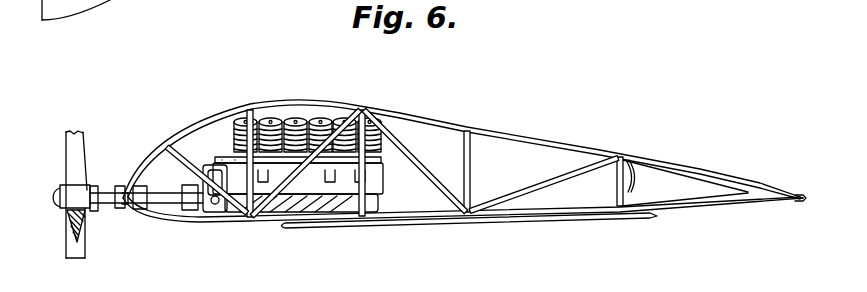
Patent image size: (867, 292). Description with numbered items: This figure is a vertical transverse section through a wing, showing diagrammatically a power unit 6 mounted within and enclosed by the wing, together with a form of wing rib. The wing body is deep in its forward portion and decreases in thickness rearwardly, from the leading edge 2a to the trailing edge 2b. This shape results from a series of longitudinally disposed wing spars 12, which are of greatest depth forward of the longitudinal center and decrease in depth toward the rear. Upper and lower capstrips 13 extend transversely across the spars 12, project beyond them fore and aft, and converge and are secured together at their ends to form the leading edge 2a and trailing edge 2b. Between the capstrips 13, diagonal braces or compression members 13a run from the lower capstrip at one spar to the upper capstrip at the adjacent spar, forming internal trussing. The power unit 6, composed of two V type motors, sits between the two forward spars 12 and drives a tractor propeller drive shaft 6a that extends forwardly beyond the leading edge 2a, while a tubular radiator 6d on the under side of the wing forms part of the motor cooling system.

The power unit 6 is at (236, 162).
The tractor propeller drive shaft 6a is at (438, 120).
The tubular radiator 6d is at (535, 222).
The wing spar 12 is at (362, 108).
The capstrip 13 is at (398, 111).
The compression member 13a is at (521, 192).
The leading edge 2a is at (127, 203).
The trailing edge 2b is at (801, 197).